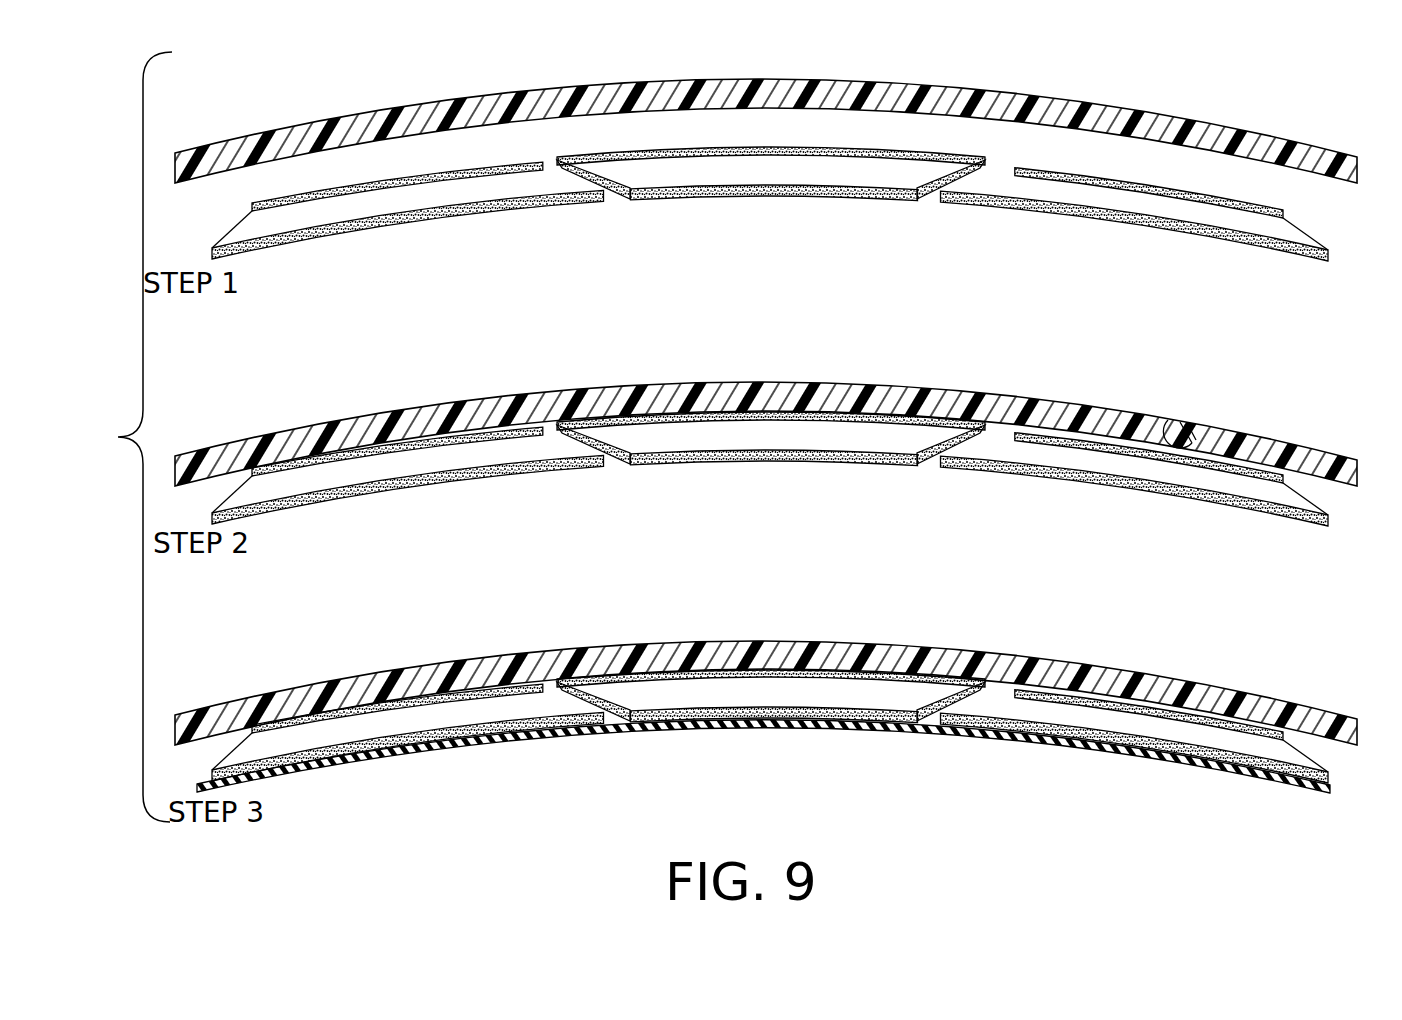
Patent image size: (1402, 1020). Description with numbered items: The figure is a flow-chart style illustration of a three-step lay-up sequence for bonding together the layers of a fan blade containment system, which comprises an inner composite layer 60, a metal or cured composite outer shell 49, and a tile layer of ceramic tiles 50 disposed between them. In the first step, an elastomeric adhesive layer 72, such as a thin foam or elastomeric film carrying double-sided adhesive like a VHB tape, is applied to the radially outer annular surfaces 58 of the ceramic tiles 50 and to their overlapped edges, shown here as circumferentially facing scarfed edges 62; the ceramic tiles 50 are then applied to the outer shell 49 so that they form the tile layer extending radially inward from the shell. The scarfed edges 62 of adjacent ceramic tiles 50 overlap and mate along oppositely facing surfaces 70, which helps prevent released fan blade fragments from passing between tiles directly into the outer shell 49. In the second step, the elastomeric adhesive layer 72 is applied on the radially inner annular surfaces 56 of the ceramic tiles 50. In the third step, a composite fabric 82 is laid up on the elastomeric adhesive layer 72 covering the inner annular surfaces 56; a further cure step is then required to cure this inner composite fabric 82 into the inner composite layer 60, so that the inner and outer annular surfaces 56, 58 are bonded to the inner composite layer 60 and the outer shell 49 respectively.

The outer shell 49 is at (872, 80).
The ceramic tiles 50 is at (787, 430).
The radially inner annular surface 56 is at (723, 190).
The radially outer annular surface 58 is at (757, 150).
The inner composite layer 60 is at (1332, 786).
The scarfed edges 62 is at (555, 168).
The oppositely facing surfaces 70 is at (907, 163).
The elastomeric adhesive layer 72 is at (817, 186).
The composite fabric 82 is at (1263, 773).